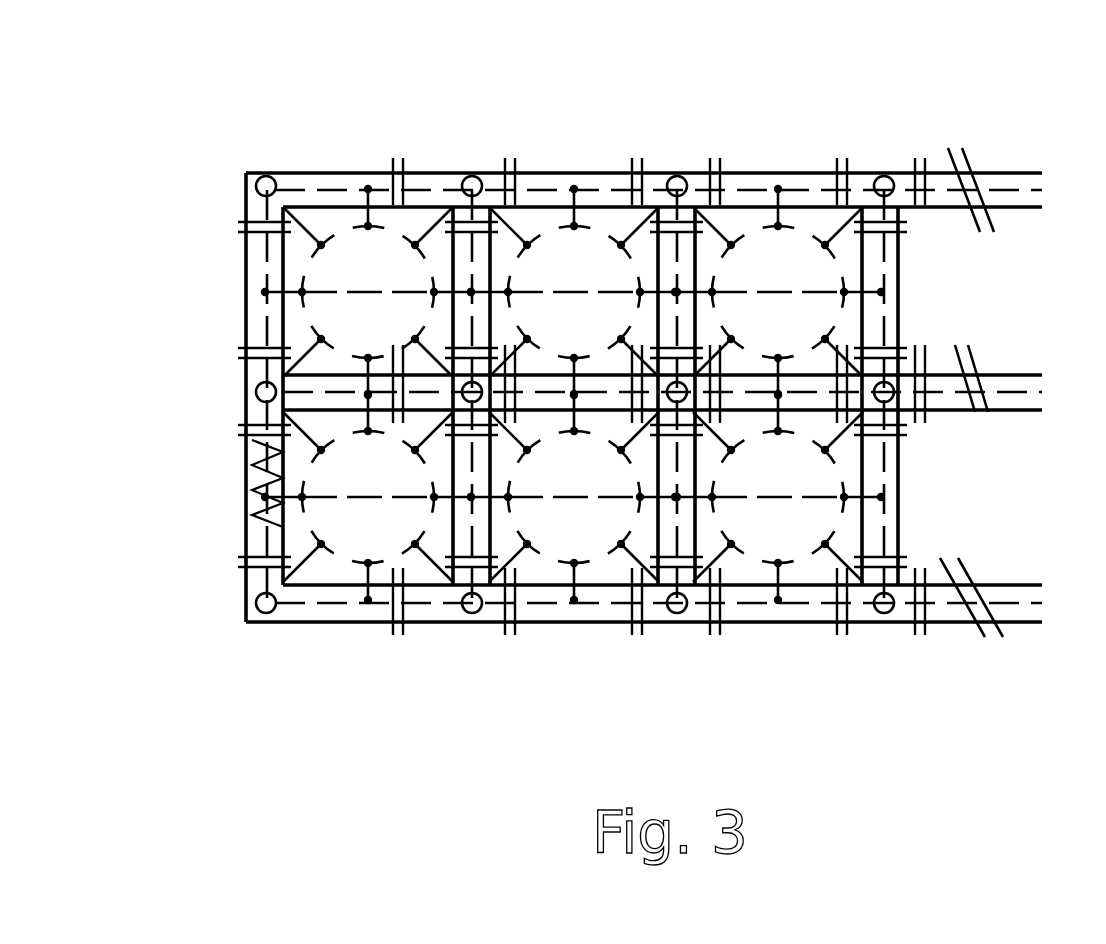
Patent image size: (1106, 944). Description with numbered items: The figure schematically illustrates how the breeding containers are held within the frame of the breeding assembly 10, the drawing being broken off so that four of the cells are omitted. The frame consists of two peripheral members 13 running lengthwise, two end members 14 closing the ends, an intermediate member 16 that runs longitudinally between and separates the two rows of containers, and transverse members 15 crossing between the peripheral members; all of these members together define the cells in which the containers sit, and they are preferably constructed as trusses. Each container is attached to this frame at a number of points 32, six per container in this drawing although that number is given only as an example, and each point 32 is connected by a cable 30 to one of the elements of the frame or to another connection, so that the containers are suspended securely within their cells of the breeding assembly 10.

The breeding assembly 10 is at (597, 563).
The peripheral members 13 is at (370, 187).
The end members 14 is at (250, 445).
The transverse members 15 is at (465, 305).
The intermediate member 16 is at (958, 363).
The cable 30 is at (518, 222).
The points 32 is at (575, 222).